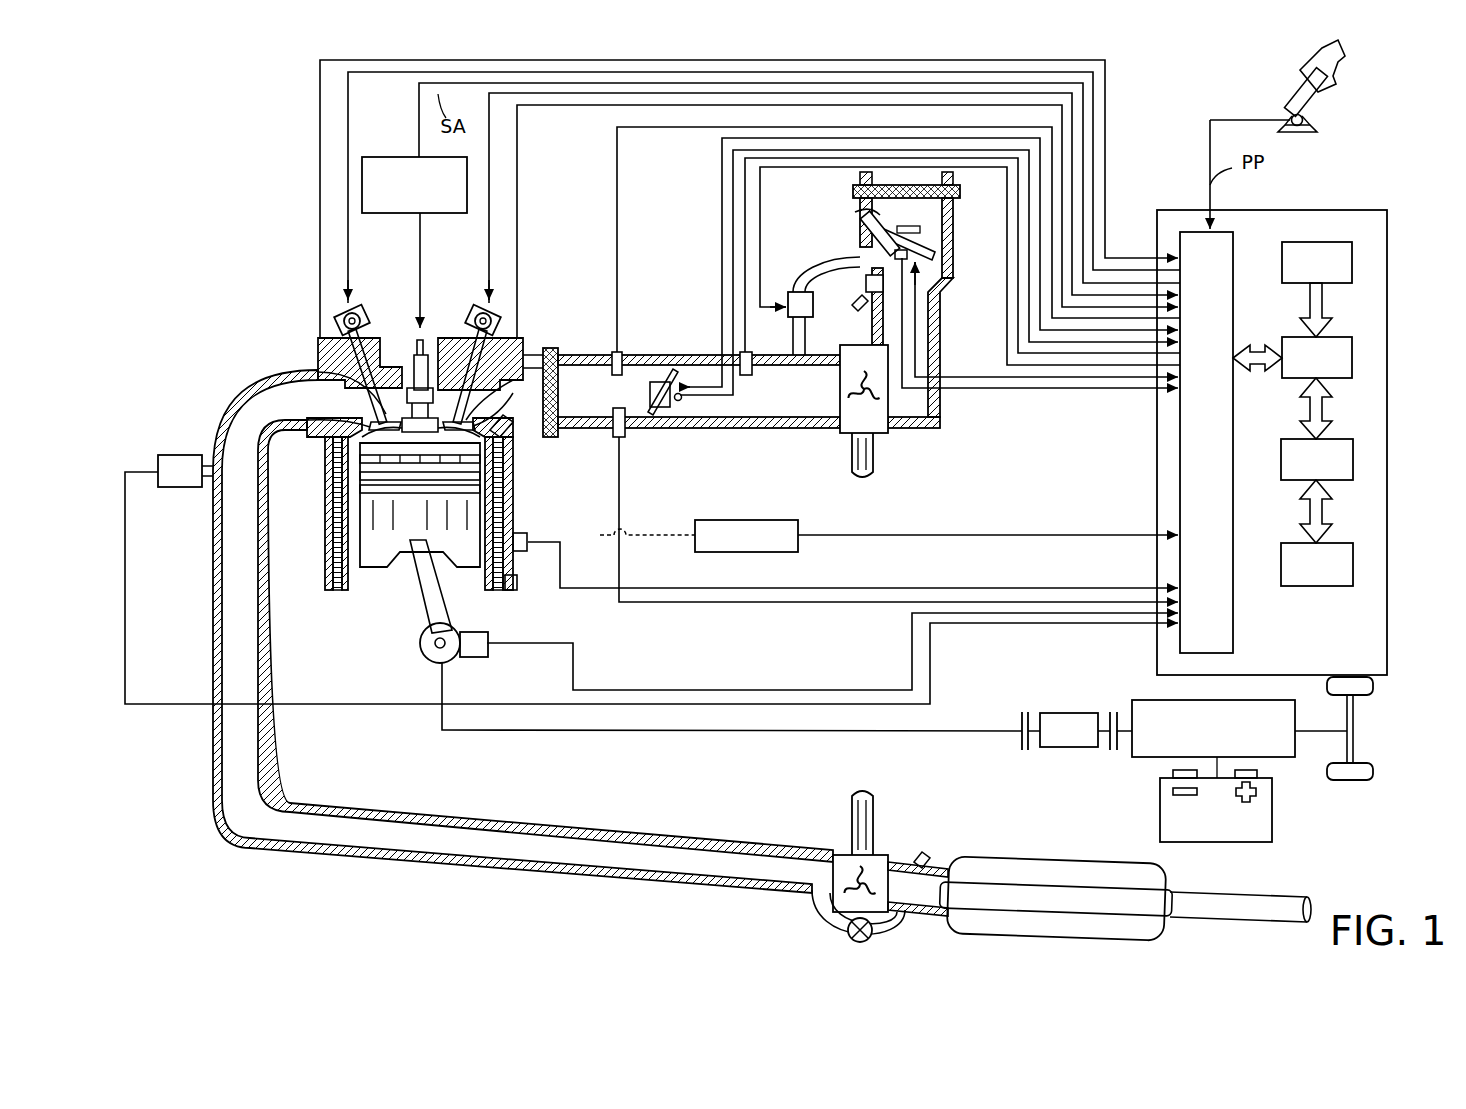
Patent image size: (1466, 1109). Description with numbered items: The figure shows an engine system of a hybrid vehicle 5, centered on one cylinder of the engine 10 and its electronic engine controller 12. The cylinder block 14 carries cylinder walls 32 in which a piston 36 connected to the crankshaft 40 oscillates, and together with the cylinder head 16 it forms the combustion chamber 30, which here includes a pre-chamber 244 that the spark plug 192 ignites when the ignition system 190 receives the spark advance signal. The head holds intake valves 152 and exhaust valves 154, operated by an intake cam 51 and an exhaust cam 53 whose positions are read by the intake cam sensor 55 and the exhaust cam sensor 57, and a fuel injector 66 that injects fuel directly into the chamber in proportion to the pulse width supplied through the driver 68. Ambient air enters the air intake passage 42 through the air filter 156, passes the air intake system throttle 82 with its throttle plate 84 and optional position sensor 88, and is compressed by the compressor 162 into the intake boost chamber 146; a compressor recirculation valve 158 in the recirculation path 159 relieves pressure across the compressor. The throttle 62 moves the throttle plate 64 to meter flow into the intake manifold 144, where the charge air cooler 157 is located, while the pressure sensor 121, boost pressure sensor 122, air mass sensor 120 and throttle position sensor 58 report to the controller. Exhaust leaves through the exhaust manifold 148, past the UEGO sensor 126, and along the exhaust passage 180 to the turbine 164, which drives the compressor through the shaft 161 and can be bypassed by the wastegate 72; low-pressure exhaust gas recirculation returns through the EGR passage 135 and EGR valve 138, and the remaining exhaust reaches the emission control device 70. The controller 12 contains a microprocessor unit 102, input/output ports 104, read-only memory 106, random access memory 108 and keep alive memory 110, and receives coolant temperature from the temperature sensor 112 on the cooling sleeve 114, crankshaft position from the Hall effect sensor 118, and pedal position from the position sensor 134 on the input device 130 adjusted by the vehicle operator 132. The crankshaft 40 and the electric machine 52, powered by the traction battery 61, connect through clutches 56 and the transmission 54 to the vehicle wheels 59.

The vehicle 5 is at (1400, 716).
The engine 10 is at (248, 272).
The electronic engine controller 12 is at (1387, 212).
The cylinder block 14 is at (317, 502).
The cylinder head 16 is at (535, 338).
The combustion chamber 30 is at (418, 445).
The cylinder walls 32 is at (363, 580).
The piston 36 is at (405, 570).
The crankshaft 40 is at (428, 660).
The air intake passage 42 is at (906, 313).
The intake cam 51 is at (480, 300).
The electric machine 52 is at (1070, 748).
The exhaust cam 53 is at (360, 300).
The transmission 54 is at (1275, 757).
The intake cam sensor 55 is at (493, 324).
The clutch 56 is at (1020, 718).
The exhaust cam sensor 57 is at (340, 324).
The throttle position sensor 58 is at (678, 405).
The vehicle wheels 59 is at (1355, 780).
The traction battery 61 is at (1215, 842).
The throttle 62 is at (658, 380).
The throttle plate 64 is at (670, 372).
The fuel injector 66 is at (505, 440).
The driver 68 is at (780, 520).
The emission control device 70 is at (948, 930).
The wastegate 72 is at (848, 935).
The air intake system throttle 82 is at (862, 238).
The throttle plate 84 is at (866, 222).
The position sensor 88 is at (868, 238).
The microprocessor unit 102 is at (1352, 365).
The input/output ports 104 is at (1233, 238).
The read-only memory 106 is at (1352, 265).
The random access memory 108 is at (1353, 455).
The keep alive memory 110 is at (1353, 560).
The temperature sensor 112 is at (530, 540).
The cooling sleeve 114 is at (515, 575).
The Hall effect sensor 118 is at (470, 657).
The air mass sensor 120 is at (622, 436).
The pressure sensor 121 is at (622, 350).
The pressure sensor 122 is at (752, 355).
The UEGO sensor 126 is at (160, 458).
The input device 130 is at (1285, 105).
The vehicle operator 132 is at (1340, 80).
The position sensor 134 is at (1312, 120).
The EGR passage 135 is at (858, 306).
The EGR valve 138 is at (866, 283).
The intake manifold 144 is at (699, 391).
The intake boost chamber 146 is at (765, 391).
The exhaust manifold 148 is at (523, 631).
The intake valves 152 is at (600, 535).
The exhaust valves 154 is at (343, 398).
The air filter 156 is at (962, 192).
The charge air cooler 157 is at (552, 438).
The compressor recirculation valve 158 is at (790, 292).
The compressor recirculation path 159 is at (808, 340).
The shaft 161 is at (880, 462).
The compressor 162 is at (888, 432).
The turbine 164 is at (838, 855).
The exhaust passage 180 is at (465, 888).
The ignition system 190 is at (405, 160).
The spark plug 192 is at (432, 312).
The pre-chamber 244 is at (414, 434).